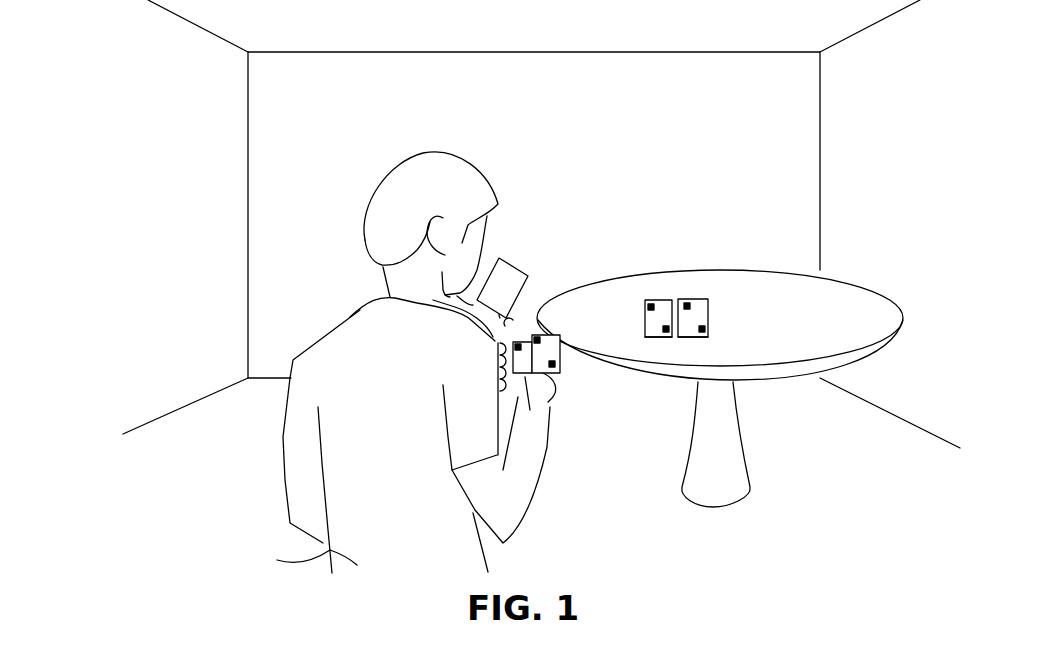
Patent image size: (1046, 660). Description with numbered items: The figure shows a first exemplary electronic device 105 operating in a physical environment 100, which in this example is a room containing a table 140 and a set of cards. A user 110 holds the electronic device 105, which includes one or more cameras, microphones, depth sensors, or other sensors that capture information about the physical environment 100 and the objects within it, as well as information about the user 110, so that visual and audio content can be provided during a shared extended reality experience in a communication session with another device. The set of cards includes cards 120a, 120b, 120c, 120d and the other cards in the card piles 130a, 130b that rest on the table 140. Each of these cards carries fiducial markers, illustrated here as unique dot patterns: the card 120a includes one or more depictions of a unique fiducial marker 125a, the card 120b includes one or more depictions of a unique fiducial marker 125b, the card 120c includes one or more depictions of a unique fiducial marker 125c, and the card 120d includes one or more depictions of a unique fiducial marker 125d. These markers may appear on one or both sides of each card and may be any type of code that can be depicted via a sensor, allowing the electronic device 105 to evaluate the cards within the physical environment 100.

The physical environment 100 is at (118, 58).
The electronic device 105 is at (518, 268).
The user 110 is at (381, 362).
The card 120a is at (537, 374).
The card 120b is at (557, 374).
The card 120c is at (665, 300).
The card 120d is at (708, 300).
The fiducial marker 125a is at (497, 347).
The fiducial marker 125b is at (497, 342).
The fiducial marker 125c is at (652, 303).
The fiducial marker 125d is at (688, 302).
The card pile 130a is at (660, 340).
The card pile 130b is at (703, 340).
The table 140 is at (743, 467).